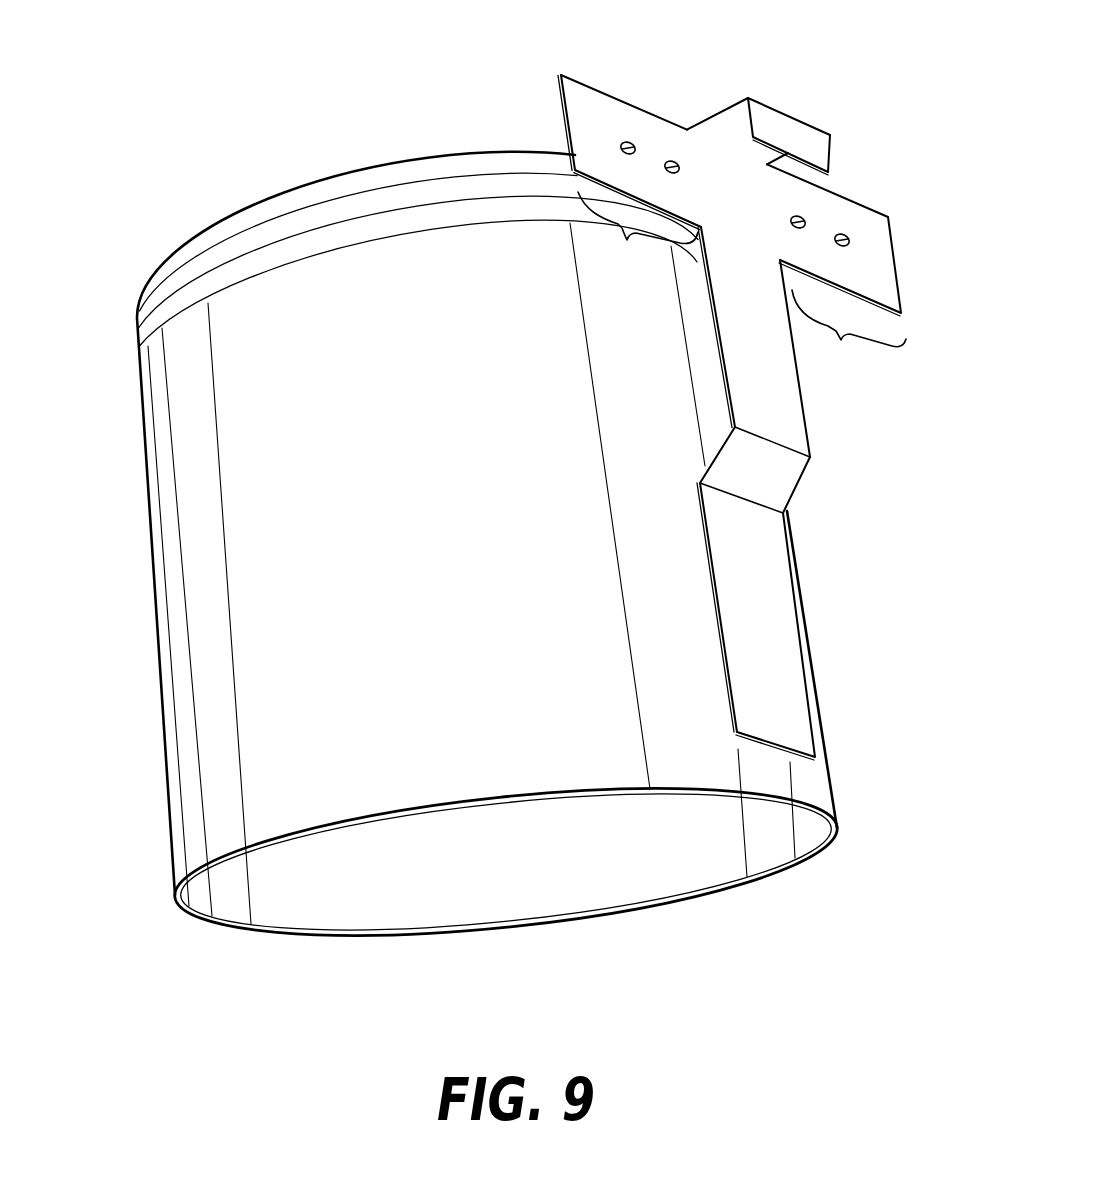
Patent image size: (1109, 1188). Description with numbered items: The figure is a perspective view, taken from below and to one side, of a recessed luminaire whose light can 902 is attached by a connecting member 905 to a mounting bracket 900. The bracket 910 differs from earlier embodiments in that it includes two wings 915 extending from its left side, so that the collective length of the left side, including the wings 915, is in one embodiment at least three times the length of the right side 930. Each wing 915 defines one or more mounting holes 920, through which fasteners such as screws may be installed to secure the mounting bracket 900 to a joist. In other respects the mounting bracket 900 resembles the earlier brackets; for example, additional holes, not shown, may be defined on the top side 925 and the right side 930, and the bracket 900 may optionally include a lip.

The mounting bracket 900 is at (427, 80).
The light can 902 is at (163, 743).
The connecting member 905 is at (813, 445).
The bracket 910 is at (846, 141).
The wings 915 is at (742, 284).
The mounting holes 920 is at (672, 160).
The top side 925 is at (712, 112).
The right side 930 is at (787, 128).